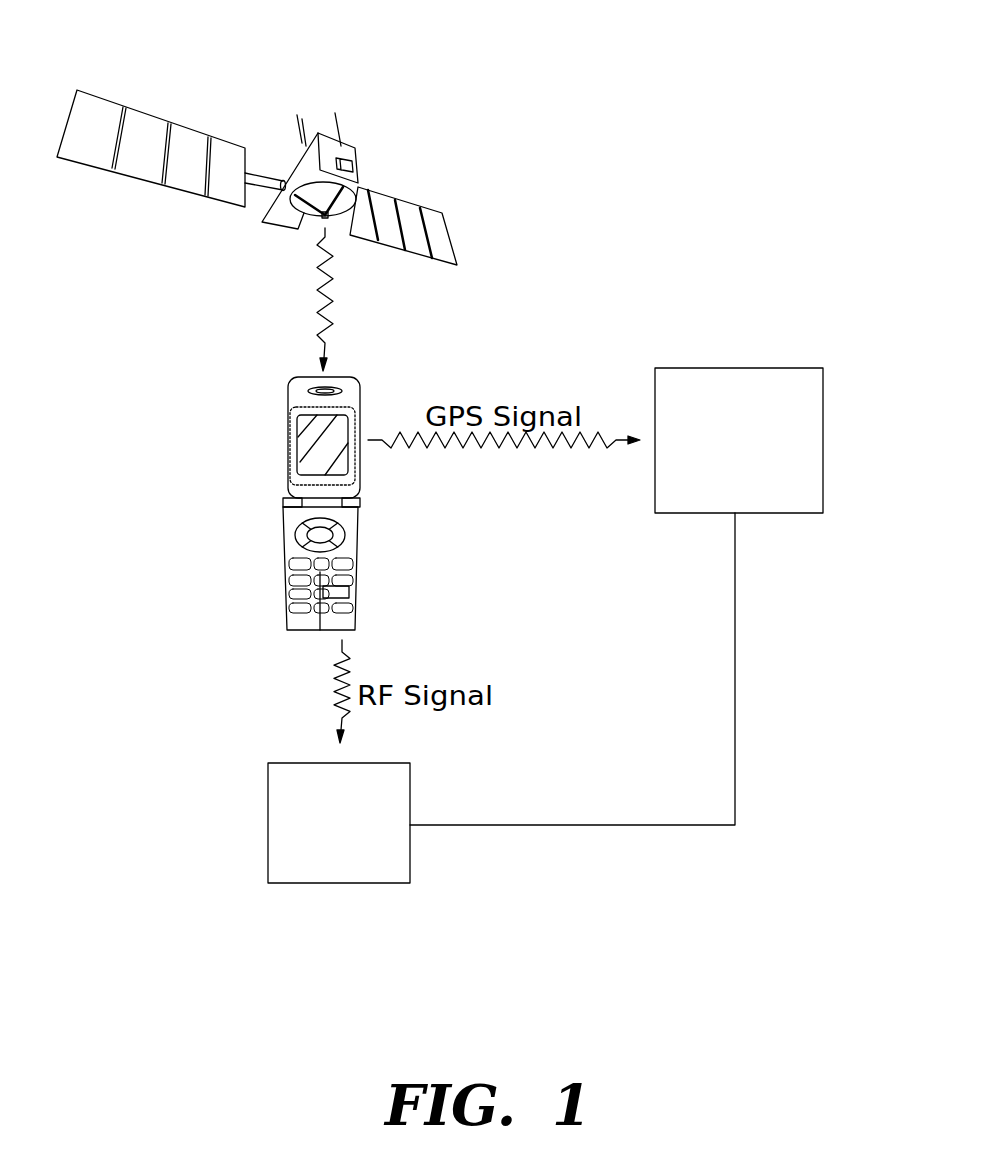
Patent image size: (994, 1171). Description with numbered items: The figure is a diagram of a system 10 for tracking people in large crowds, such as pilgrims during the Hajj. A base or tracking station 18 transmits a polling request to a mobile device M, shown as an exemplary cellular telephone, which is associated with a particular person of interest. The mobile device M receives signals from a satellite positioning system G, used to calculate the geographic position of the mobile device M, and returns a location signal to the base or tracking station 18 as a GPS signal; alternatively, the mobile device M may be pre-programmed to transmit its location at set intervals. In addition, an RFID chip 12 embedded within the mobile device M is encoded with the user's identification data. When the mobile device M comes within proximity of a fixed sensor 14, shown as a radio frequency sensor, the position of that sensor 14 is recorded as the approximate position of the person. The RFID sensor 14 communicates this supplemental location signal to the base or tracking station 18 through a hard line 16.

The system 10 is at (740, 80).
The GPS satellite system G is at (347, 147).
The mobile device M is at (283, 545).
The RFID chip 12 is at (338, 587).
The base or tracking station 18 is at (783, 368).
The hard line 16 is at (663, 825).
The fixed sensor 14 is at (410, 865).